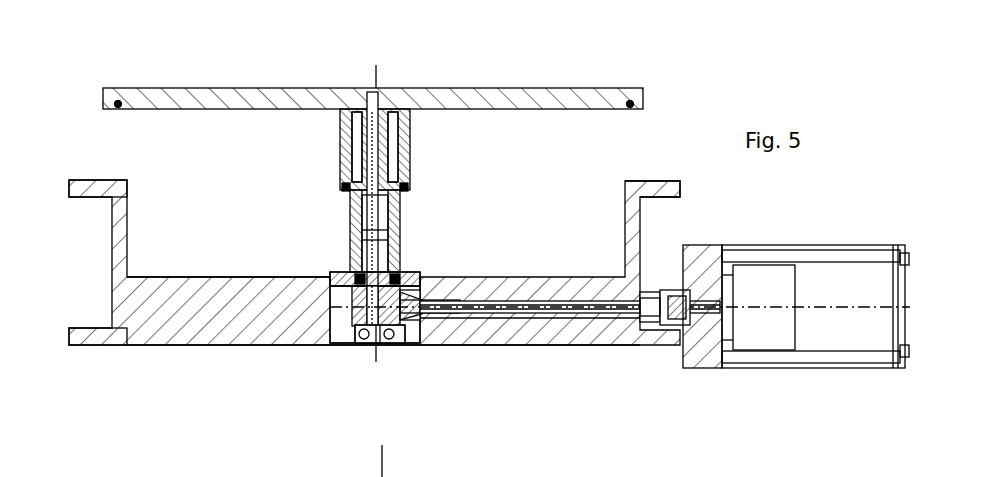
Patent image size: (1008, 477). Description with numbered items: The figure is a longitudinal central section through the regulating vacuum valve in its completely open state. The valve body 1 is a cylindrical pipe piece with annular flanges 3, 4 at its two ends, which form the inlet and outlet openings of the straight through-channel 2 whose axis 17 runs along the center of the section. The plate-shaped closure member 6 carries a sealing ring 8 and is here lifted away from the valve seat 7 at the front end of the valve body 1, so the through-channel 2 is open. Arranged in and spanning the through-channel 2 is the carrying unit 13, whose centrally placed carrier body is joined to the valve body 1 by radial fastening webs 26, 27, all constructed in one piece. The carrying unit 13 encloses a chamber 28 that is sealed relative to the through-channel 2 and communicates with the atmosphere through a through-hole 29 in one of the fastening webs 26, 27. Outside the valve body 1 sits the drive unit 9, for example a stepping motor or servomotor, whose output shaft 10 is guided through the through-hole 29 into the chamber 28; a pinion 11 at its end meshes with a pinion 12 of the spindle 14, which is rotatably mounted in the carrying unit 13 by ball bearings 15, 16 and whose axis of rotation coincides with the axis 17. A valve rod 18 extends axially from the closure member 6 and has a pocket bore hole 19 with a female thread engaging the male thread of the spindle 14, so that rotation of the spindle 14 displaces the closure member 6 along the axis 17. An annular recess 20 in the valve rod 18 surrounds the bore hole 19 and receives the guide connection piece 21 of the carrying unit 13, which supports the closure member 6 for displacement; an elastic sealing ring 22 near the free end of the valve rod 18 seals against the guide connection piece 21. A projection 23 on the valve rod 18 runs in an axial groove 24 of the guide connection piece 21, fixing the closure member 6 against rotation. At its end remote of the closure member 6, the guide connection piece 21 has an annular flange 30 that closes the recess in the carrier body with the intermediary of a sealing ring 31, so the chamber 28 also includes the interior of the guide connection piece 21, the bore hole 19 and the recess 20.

The valve body 1 is at (118, 232).
The through-channel 2 is at (212, 203).
The annular flange 3 is at (83, 190).
The annular flange 4 is at (90, 340).
The closure member 6 is at (152, 92).
The valve seat 7 is at (655, 185).
The sealing ring 8 is at (630, 100).
The drive unit 9 is at (827, 340).
The output shaft 10 is at (587, 306).
The pinion 11 is at (412, 345).
The pinion 12 is at (328, 343).
The carrying unit 13 is at (258, 355).
The spindle 14 is at (400, 212).
The ball bearing 15 is at (388, 345).
The ball bearing 16 is at (450, 345).
The axis 17 is at (378, 66).
The valve rod 18 is at (402, 196).
The bore hole 19 is at (412, 140).
The recess 20 is at (340, 130).
The guide connection piece 21 is at (352, 252).
The sealing ring 22 is at (340, 186).
The projection 23 is at (412, 182).
The groove 24 is at (372, 233).
The fastening web 26 is at (170, 340).
The fastening web 27 is at (615, 330).
The chamber 28 is at (342, 343).
The through-hole 29 is at (568, 310).
The annular flange 30 is at (410, 270).
The sealing ring 31 is at (425, 272).